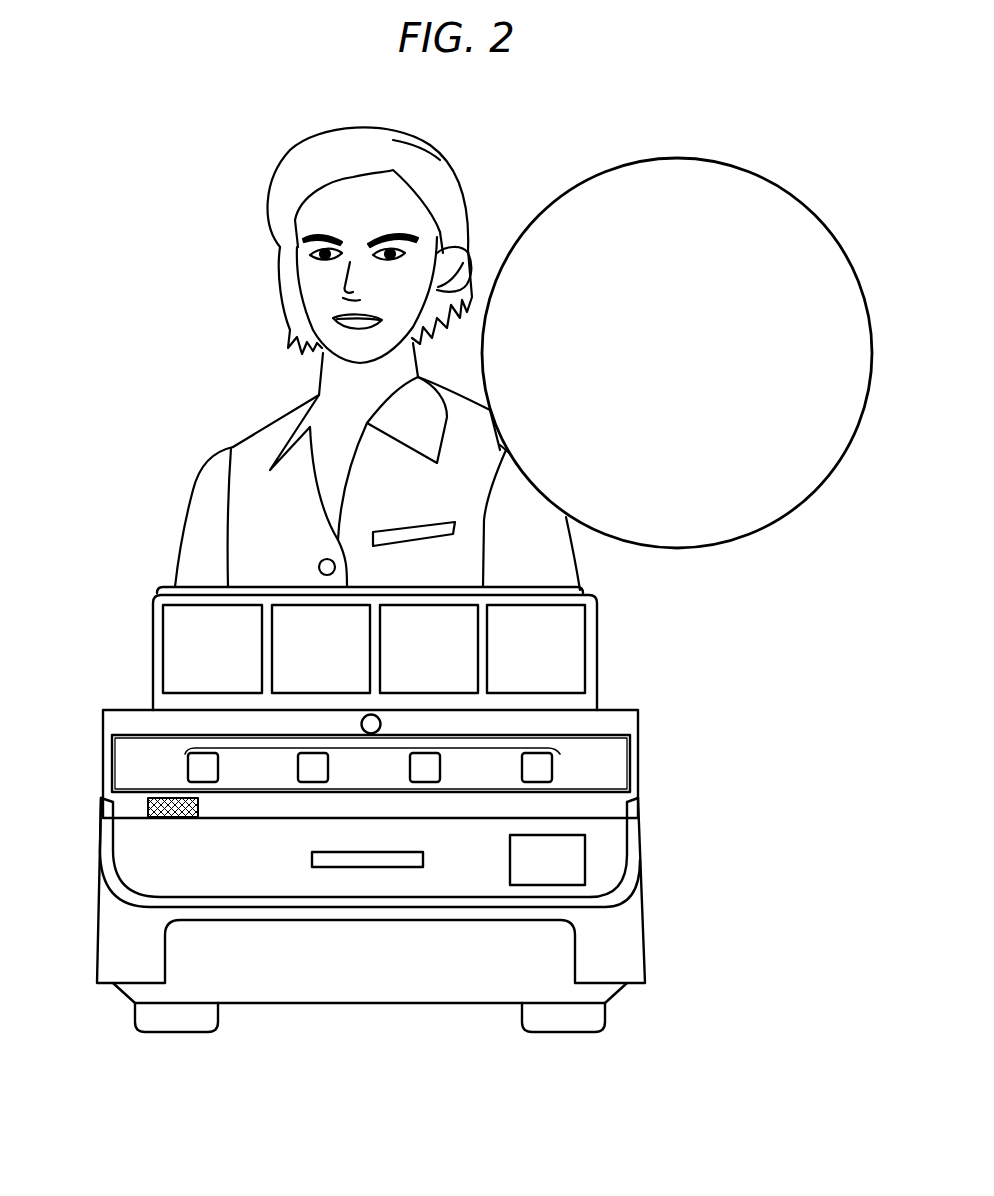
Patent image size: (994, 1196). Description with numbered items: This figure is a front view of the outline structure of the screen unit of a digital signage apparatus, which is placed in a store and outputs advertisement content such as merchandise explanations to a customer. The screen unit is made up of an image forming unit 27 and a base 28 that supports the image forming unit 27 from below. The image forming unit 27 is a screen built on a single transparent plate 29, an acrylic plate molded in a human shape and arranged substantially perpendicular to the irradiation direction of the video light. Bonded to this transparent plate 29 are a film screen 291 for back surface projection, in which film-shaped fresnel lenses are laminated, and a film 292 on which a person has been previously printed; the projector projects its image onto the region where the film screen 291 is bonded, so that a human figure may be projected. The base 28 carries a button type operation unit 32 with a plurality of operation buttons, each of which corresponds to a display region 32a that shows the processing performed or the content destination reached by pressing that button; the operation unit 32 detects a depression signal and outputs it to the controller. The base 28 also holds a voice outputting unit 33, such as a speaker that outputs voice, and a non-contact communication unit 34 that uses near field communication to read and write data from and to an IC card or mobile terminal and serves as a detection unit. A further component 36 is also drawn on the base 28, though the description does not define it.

The image forming unit 27 is at (158, 250).
The base 28 is at (663, 850).
The transparent plate 29 is at (323, 138).
The film screen 291 is at (767, 200).
The film 292 is at (440, 190).
The operation unit 32 is at (228, 747).
The display regions 32a is at (272, 582).
The voice outputting unit 33 is at (148, 816).
The non-contact communication unit 34 is at (570, 855).
The operation button 36 is at (382, 722).